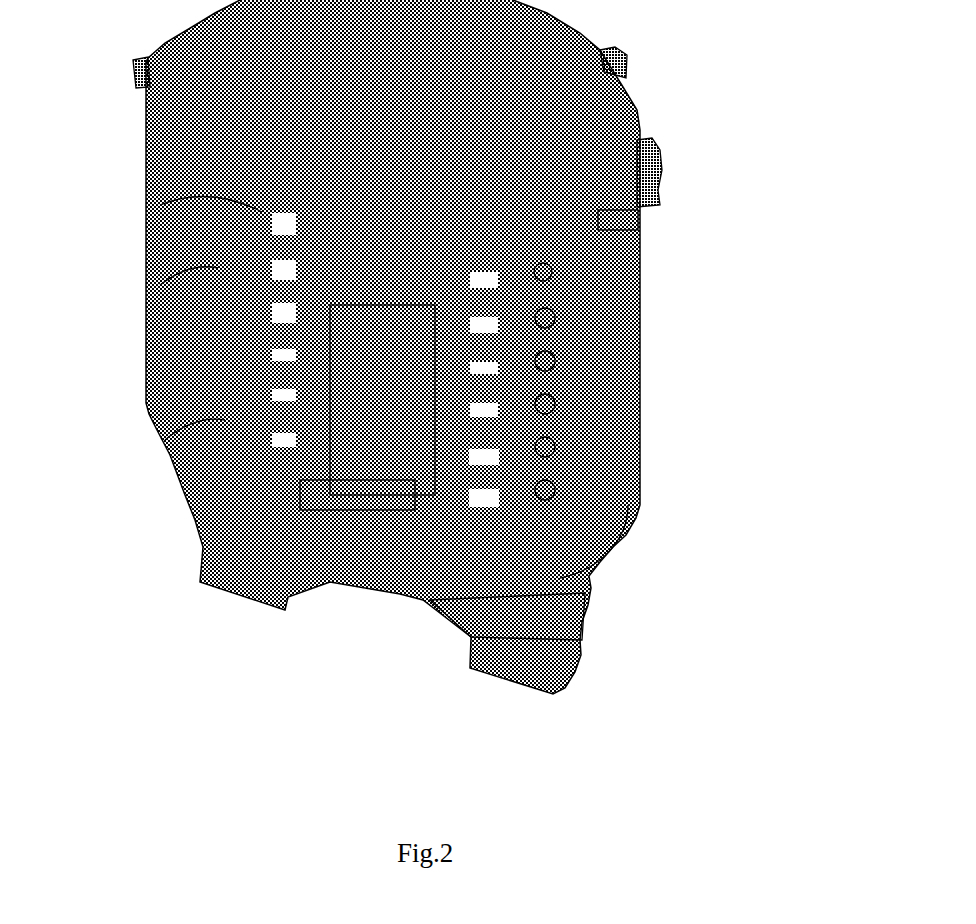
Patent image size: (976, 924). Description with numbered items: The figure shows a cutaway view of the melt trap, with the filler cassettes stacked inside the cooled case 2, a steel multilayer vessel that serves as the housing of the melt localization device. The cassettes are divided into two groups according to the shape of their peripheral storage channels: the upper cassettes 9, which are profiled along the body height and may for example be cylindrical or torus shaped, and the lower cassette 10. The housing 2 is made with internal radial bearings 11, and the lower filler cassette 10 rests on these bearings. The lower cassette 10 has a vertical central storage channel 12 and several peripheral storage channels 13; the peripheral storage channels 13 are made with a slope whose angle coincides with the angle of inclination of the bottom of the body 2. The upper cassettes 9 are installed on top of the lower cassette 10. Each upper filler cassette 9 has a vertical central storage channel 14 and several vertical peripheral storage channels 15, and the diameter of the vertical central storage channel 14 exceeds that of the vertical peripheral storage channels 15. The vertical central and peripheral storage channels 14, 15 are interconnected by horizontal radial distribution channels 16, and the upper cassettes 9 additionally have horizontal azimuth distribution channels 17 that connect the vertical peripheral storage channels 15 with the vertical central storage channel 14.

The cooled case 2 is at (655, 178).
The upper cassettes 9 is at (560, 318).
The lower cassette 10 is at (222, 420).
The internal radial bearings 11 is at (605, 548).
The vertical central storage channel 12 is at (370, 497).
The peripheral storage channels 13 is at (575, 574).
The vertical central storage channel 14 is at (325, 340).
The vertical peripheral storage channels 15 is at (215, 268).
The horizontal radial distribution channels 16 is at (260, 212).
The horizontal azimuth distribution channels 17 is at (545, 270).